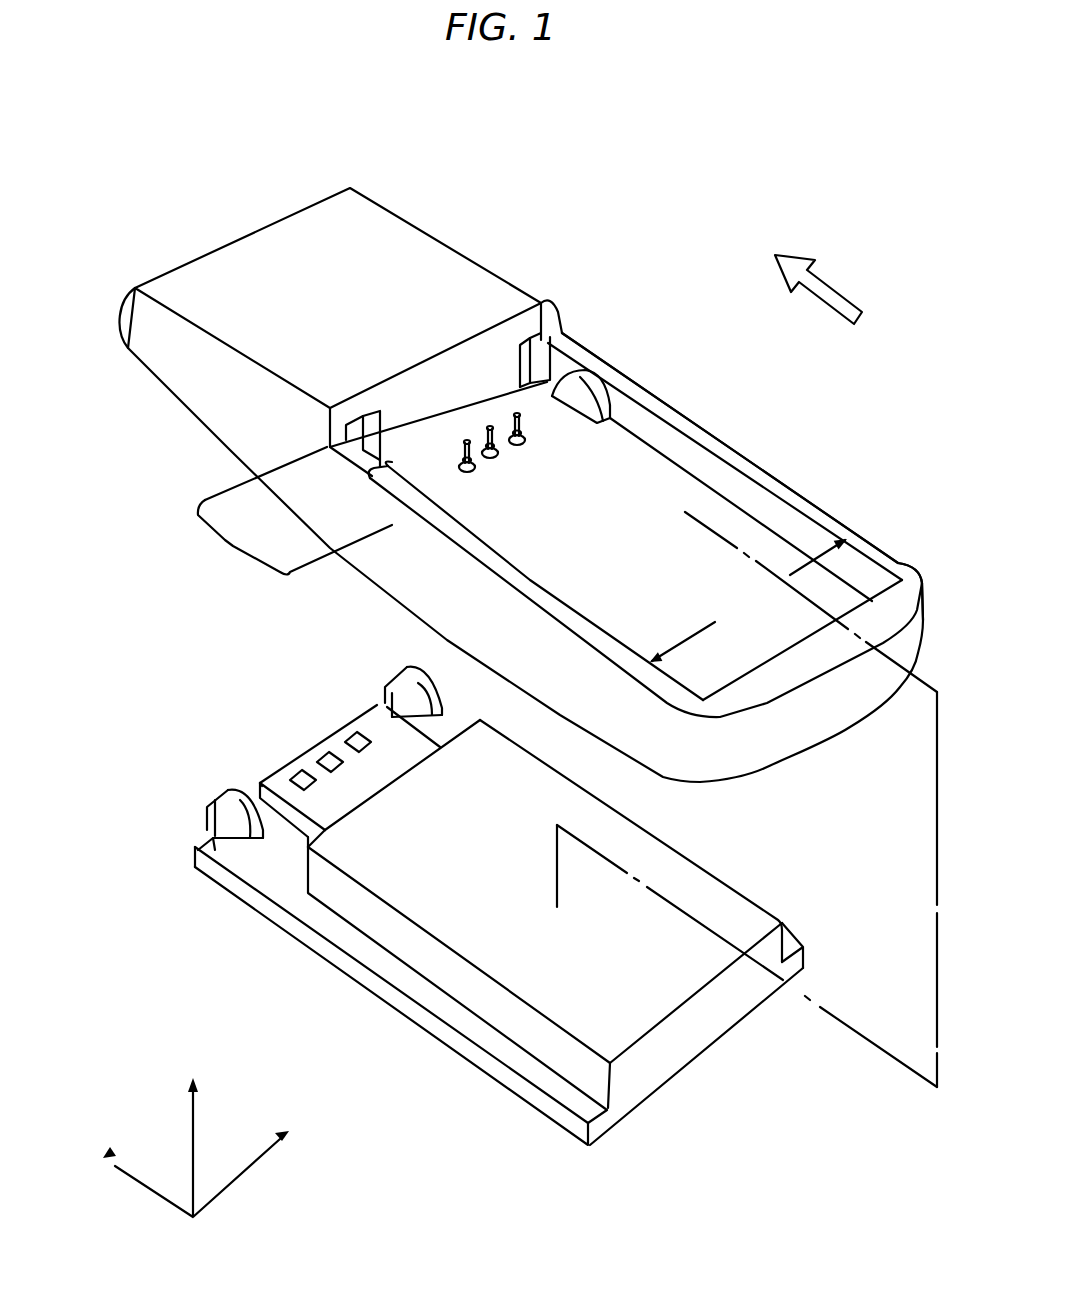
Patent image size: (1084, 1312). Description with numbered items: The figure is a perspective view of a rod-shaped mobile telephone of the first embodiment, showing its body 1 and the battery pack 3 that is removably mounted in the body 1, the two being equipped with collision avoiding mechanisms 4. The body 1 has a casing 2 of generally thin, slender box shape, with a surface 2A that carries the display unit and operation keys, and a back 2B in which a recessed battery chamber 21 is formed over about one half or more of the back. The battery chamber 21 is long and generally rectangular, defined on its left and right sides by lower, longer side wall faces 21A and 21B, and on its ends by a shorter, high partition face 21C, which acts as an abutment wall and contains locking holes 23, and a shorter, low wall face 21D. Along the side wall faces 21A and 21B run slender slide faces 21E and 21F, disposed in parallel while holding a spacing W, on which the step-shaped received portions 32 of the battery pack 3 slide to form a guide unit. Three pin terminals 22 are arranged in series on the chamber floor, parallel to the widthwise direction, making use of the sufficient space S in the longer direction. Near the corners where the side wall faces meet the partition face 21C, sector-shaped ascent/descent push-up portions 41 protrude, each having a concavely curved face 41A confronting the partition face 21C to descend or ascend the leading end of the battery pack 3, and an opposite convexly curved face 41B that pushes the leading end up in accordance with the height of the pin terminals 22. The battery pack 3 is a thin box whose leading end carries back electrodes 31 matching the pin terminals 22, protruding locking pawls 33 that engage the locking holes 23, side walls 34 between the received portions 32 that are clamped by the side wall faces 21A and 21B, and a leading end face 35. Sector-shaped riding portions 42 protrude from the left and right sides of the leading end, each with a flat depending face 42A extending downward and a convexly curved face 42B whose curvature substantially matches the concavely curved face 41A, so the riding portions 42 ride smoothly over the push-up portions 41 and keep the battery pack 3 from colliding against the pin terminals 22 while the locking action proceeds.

The body 1 is at (190, 437).
The casing 2 is at (452, 246).
The surface 2A is at (283, 437).
The back 2B is at (316, 252).
The battery pack 3 is at (150, 770).
The collision avoiding mechanisms 4 is at (619, 299).
The battery chamber 21 is at (683, 598).
The side wall face 21A is at (722, 477).
The side wall face 21B is at (592, 610).
The partition face 21C is at (443, 384).
The wall face 21D is at (768, 650).
The slide face 21E is at (668, 388).
The slide face 21F is at (380, 478).
The pin terminals 22 is at (490, 458).
The locking holes 23 is at (370, 430).
The back electrodes 31 is at (357, 738).
The received portions 32 is at (435, 995).
The locking pawls 33 is at (383, 700).
The side walls 34 is at (488, 1004).
The leading end face 35 is at (252, 790).
The ascent/descent push-up portion 41 is at (622, 204).
The concavely curved face 41A is at (545, 303).
The convexly curved face 41B is at (597, 397).
The riding portions 42 is at (302, 665).
The depending faces 42A is at (392, 678).
The convexly curved faces 42B is at (412, 665).
The space S is at (226, 542).
The spacing W is at (748, 600).